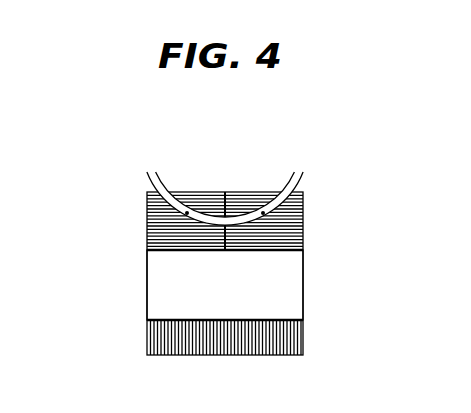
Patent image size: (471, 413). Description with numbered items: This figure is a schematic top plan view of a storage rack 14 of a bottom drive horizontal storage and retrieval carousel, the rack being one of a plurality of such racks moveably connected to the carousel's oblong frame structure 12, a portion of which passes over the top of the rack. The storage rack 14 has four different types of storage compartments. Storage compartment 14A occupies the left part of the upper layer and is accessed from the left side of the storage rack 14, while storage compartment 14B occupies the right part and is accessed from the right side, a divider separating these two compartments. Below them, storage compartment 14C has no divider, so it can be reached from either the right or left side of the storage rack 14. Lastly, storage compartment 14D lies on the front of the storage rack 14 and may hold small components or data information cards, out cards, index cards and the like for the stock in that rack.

The frame structure 12 is at (286, 175).
The storage rack 14 is at (312, 288).
The storage compartment 14A is at (165, 223).
The storage compartment 14B is at (305, 217).
The storage compartment 14C is at (175, 297).
The storage compartment 14D is at (226, 344).